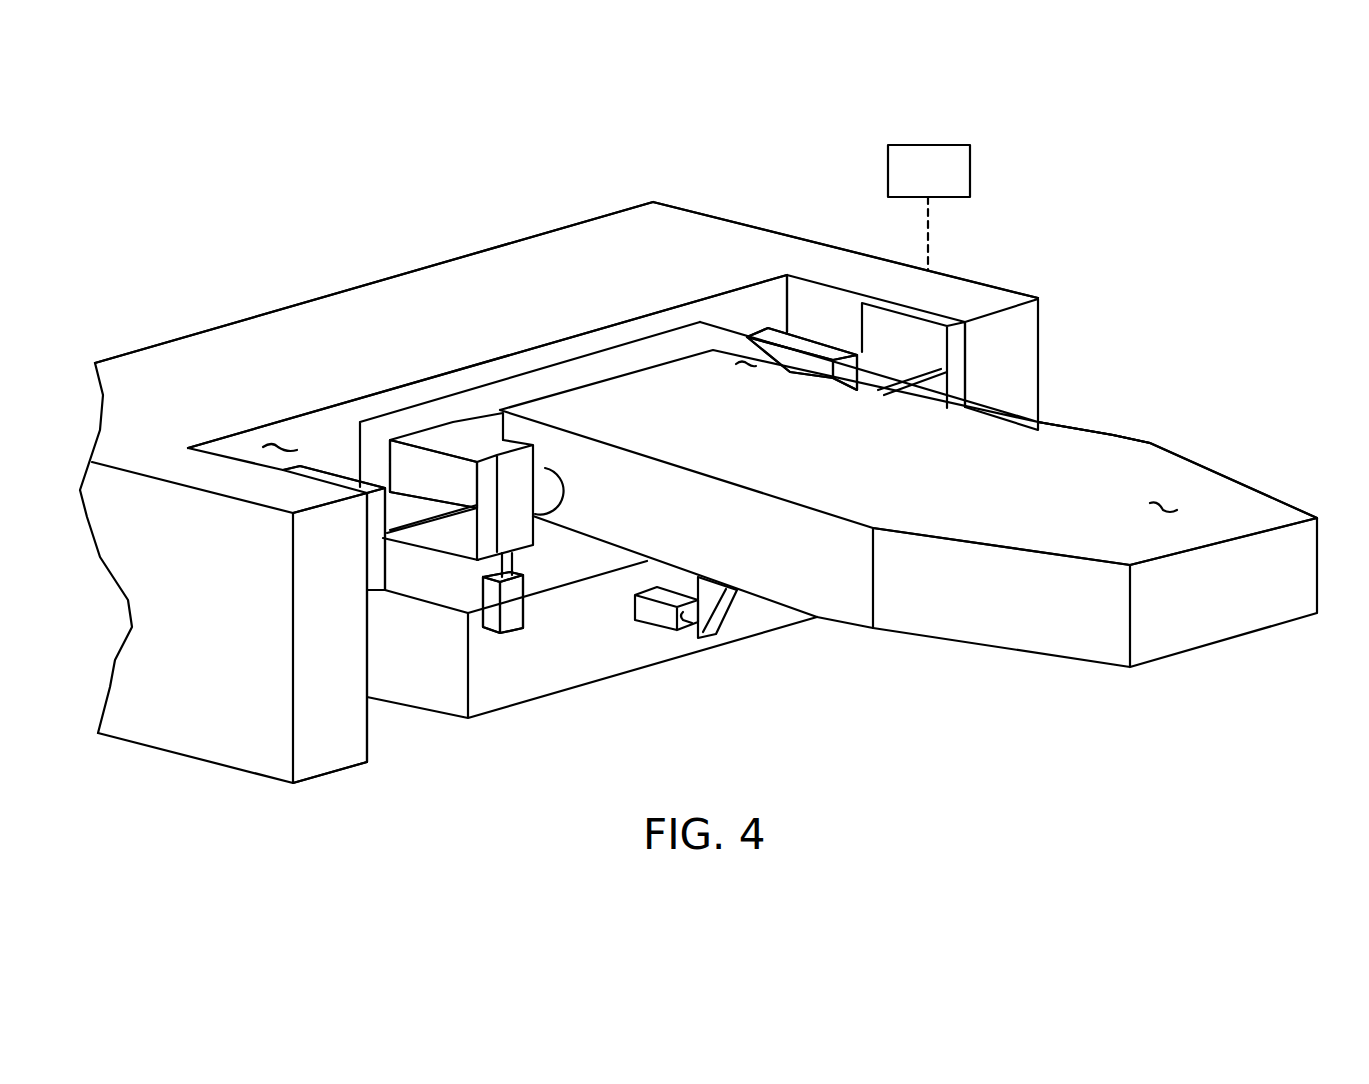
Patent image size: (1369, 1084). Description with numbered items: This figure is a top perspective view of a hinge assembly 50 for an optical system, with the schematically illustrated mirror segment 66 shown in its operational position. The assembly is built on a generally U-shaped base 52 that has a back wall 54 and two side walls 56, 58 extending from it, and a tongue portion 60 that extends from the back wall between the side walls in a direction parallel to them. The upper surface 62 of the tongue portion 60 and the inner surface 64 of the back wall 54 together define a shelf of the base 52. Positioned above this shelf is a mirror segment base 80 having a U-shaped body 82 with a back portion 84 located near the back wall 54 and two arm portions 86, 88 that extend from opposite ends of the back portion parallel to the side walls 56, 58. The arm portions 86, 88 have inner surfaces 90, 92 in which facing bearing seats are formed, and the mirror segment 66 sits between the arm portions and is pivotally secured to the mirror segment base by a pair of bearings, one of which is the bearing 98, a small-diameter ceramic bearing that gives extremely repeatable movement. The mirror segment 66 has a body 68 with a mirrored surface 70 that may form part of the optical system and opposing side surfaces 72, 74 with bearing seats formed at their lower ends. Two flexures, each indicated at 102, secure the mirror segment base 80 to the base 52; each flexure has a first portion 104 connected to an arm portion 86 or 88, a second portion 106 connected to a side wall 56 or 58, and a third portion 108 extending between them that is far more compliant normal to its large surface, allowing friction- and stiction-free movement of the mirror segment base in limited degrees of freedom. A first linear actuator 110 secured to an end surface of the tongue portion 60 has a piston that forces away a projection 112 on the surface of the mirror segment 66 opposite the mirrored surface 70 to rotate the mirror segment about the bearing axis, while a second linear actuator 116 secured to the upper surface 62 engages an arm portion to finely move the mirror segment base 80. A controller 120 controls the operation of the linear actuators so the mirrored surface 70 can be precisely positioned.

The hinge assembly 50 is at (484, 270).
The base 52 is at (195, 760).
The back wall 54 is at (642, 243).
The side wall 56 is at (322, 730).
The side wall 58 is at (1012, 350).
The tongue portion 60 is at (607, 655).
The upper surface 62 is at (450, 572).
The inner surface 64 is at (275, 427).
The mirror segment 66 is at (1317, 518).
The body 68 is at (1132, 460).
The mirrored surface 70 is at (1160, 507).
The side surface 72 is at (847, 582).
The side surface 74 is at (1113, 435).
The mirror segment base 80 is at (489, 490).
The U-shaped body 82 is at (717, 340).
The back portion 84 is at (635, 355).
The arm portion 86 is at (520, 537).
The arm portion 88 is at (833, 374).
The inner surface 90 is at (415, 493).
The inner surface 92 is at (742, 362).
The bearing 98 is at (545, 470).
The flexure 102 is at (278, 440).
The first portion 104 is at (483, 535).
The second portion 106 is at (947, 318).
The third portion 108 is at (332, 473).
The first linear actuator 110 is at (660, 615).
The projection 112 is at (723, 610).
The second linear actuator 116 is at (512, 623).
The controller 120 is at (943, 144).